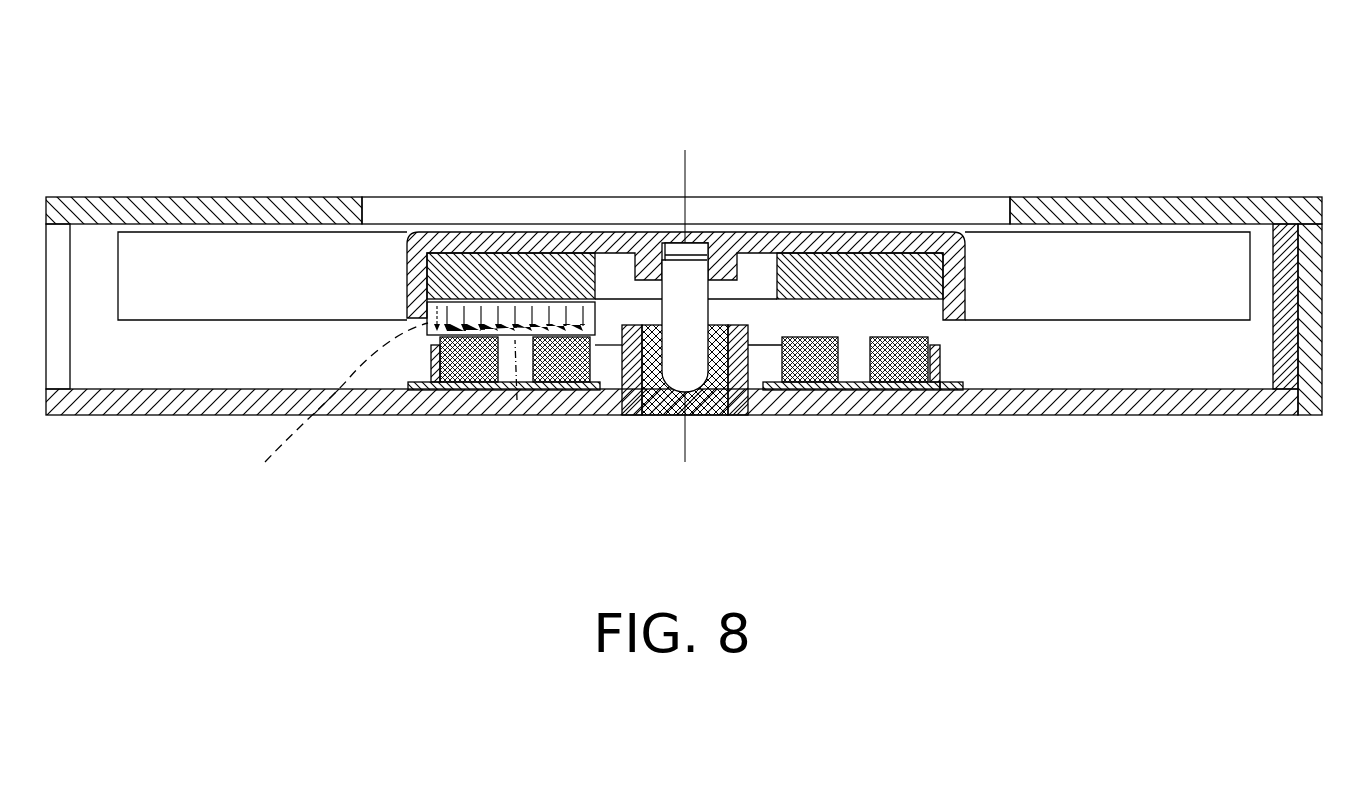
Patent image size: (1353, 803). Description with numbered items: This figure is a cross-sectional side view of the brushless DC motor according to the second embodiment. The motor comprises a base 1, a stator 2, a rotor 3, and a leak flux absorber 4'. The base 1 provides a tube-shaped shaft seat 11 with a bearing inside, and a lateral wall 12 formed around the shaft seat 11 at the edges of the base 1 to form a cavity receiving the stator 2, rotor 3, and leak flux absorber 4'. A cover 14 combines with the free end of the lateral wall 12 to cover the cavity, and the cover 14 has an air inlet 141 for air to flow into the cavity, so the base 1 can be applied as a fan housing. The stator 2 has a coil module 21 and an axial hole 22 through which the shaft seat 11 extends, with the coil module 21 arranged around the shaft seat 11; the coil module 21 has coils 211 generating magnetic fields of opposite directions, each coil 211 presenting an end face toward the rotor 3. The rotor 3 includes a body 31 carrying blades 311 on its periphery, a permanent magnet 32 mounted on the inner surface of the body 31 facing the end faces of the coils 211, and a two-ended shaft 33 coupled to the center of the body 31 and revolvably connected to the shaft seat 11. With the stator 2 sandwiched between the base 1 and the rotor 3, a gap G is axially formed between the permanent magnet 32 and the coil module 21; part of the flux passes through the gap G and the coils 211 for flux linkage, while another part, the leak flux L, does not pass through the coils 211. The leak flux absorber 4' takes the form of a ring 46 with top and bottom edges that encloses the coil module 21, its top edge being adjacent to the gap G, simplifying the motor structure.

The base 1 is at (1078, 445).
The cover 14 is at (233, 205).
The air inlet 141 is at (388, 205).
The lateral wall 12 is at (1284, 252).
The blades 311 is at (1124, 240).
The rotor 3 is at (486, 226).
The body 31 is at (778, 243).
The permanent magnet 32 is at (840, 276).
The leak flux absorber 4' is at (461, 406).
The leak flux L is at (340, 410).
The ring 46 is at (430, 350).
The stator 2 is at (474, 396).
The gap G is at (517, 400).
The coil module 21 is at (922, 396).
The coils 211 is at (898, 392).
The axial hole 22 is at (760, 392).
The shaft seat 11 is at (617, 345).
The shaft 33 is at (700, 390).